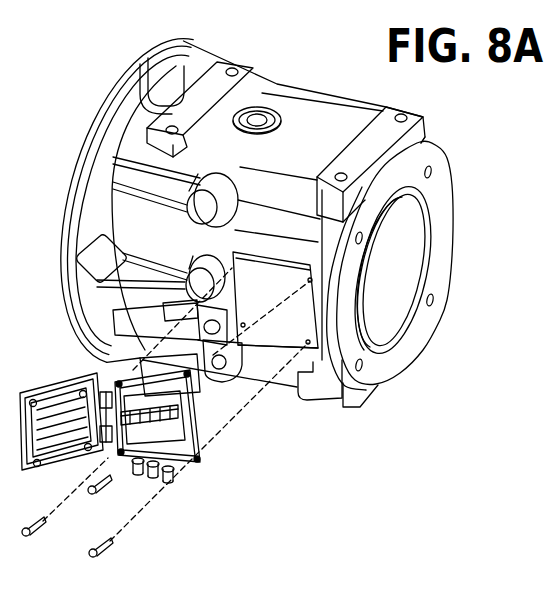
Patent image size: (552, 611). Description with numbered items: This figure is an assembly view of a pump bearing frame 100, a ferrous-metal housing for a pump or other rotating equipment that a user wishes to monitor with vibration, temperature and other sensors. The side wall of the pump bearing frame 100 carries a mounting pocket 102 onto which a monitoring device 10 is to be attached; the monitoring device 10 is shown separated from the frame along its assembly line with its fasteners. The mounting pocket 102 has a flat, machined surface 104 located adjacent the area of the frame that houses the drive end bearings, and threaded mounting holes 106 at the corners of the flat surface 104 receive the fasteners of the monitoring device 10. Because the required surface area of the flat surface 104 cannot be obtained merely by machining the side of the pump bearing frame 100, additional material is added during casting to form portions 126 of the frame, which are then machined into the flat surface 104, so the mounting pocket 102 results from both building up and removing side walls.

The monitoring device 10 is at (191, 488).
The pump bearing frame 100 is at (104, 47).
The mounting pocket 102 is at (268, 366).
The flat surface 104 is at (293, 308).
The threaded mounting holes 106 is at (235, 252).
The portions 126 is at (263, 240).